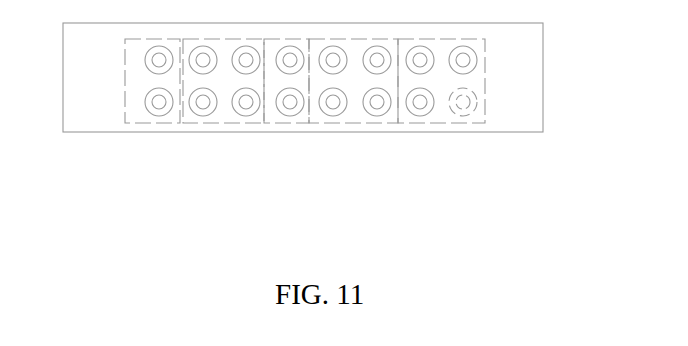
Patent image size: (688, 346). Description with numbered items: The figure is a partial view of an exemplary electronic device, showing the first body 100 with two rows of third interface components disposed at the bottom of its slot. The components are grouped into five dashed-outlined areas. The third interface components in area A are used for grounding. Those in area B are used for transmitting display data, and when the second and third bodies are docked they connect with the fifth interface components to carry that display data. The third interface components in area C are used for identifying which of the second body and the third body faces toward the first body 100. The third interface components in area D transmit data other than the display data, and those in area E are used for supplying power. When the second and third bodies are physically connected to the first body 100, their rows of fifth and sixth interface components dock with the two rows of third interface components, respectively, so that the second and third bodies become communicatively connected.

The first body 100 is at (517, 119).
The area A is at (125, 122).
The area B is at (223, 120).
The area C is at (256, 175).
The area D is at (318, 175).
The area E is at (433, 120).